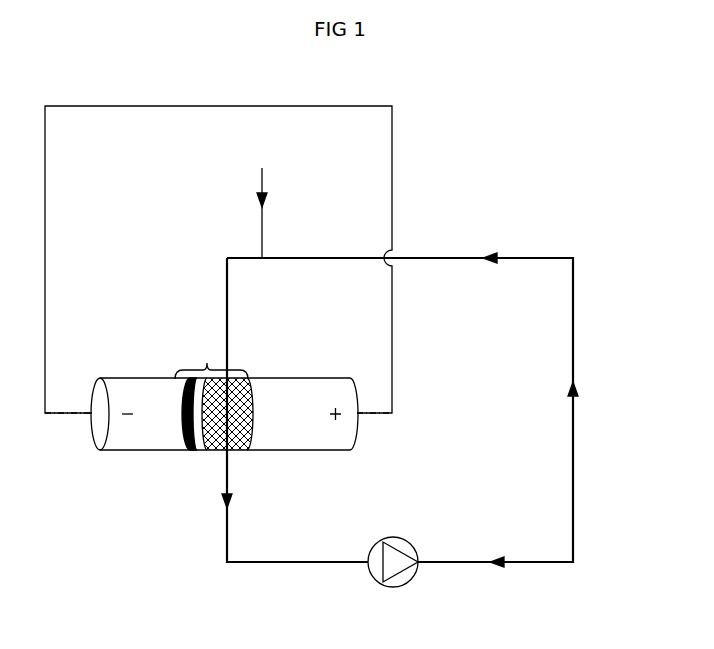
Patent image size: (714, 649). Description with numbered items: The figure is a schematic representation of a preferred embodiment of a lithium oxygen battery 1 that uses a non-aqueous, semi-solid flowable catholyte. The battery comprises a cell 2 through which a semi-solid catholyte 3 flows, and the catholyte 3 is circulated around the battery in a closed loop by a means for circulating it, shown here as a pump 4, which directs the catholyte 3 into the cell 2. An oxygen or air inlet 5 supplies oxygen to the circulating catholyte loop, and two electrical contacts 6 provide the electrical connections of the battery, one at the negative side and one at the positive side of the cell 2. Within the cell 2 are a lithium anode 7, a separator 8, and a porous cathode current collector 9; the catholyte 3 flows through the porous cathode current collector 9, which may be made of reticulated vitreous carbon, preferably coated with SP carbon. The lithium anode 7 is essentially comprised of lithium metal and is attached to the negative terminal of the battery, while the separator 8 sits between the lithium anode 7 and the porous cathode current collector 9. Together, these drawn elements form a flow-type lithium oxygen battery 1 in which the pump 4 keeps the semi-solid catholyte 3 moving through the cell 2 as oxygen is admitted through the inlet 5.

The lithium oxygen battery 1 is at (522, 193).
The cell 2 is at (211, 360).
The semi-solid catholyte 3 is at (573, 327).
The pump 4 is at (408, 580).
The oxygen or air inlet 5 is at (262, 235).
The electrical contacts 6 is at (165, 422).
The lithium anode 7 is at (184, 450).
The separator 8 is at (197, 452).
The porous cathode current collector 9 is at (218, 452).